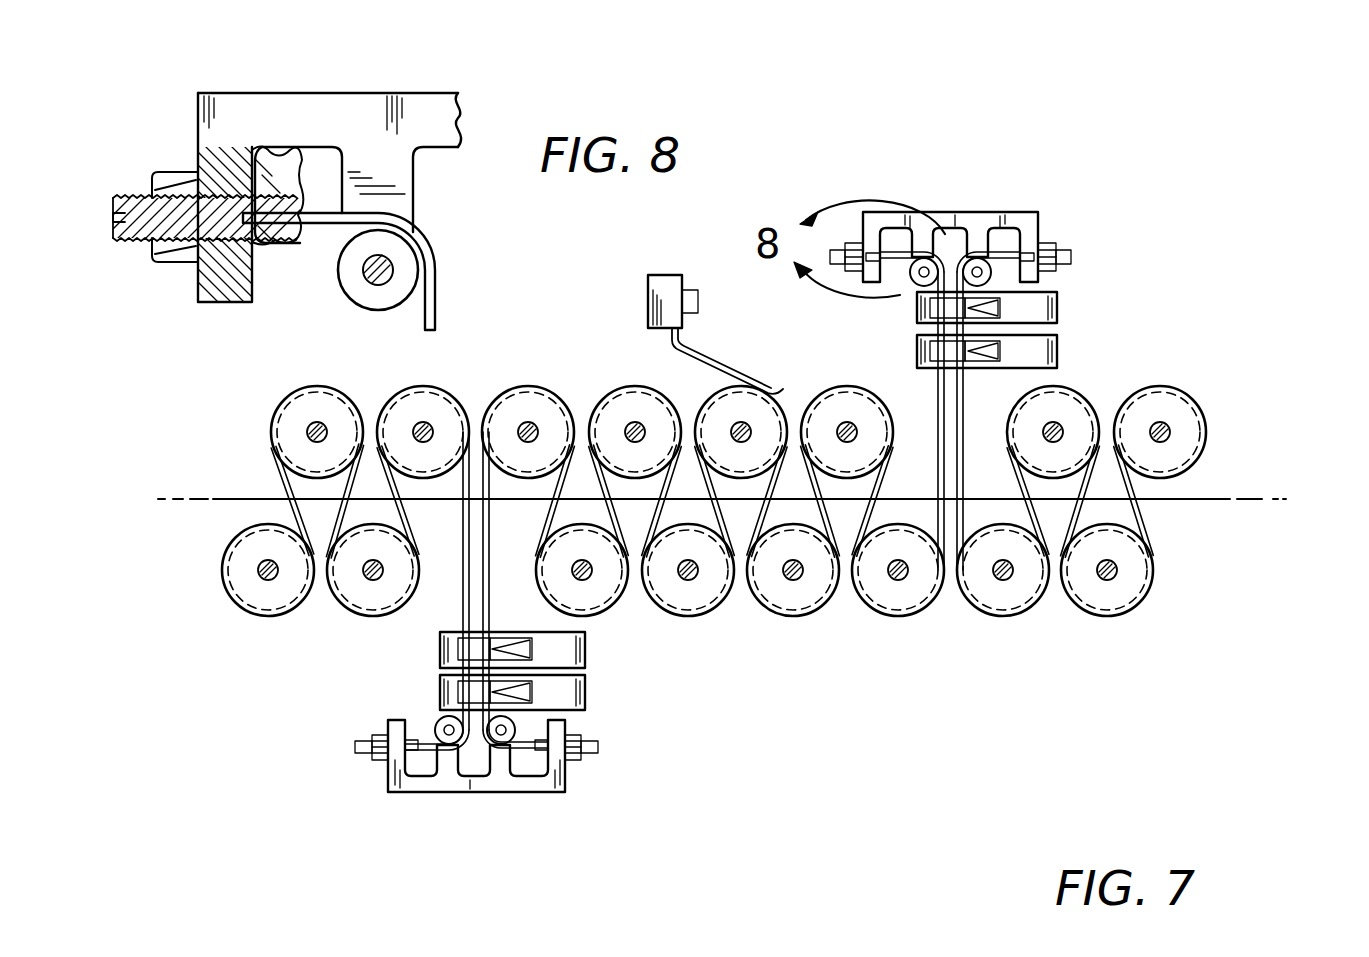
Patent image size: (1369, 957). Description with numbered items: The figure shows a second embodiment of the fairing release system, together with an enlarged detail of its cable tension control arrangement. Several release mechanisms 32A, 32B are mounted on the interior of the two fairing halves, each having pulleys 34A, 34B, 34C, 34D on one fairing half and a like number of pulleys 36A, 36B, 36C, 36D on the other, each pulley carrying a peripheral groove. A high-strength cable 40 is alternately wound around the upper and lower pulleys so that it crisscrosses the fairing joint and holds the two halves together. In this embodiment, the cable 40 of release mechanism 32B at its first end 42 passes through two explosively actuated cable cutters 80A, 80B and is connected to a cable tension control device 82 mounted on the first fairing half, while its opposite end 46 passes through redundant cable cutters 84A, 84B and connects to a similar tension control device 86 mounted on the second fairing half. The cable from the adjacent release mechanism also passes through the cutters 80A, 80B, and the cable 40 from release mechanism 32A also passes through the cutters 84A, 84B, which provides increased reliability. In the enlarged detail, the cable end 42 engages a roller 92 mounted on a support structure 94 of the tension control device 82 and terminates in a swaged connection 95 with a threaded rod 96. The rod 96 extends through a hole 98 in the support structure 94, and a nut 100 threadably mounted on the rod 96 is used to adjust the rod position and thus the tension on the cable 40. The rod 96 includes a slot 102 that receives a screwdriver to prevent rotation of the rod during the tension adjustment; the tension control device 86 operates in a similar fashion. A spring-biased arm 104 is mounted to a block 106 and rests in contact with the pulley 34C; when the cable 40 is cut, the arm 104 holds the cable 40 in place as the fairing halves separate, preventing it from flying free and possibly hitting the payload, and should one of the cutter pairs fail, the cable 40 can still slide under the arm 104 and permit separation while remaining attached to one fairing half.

In FIG. 7, the release mechanism 32A is at (205, 588).
In FIG. 7, the release mechanism 32B is at (710, 715).
In FIG. 7, the pulley 34A is at (528, 386).
In FIG. 7, the pulley 34B is at (628, 388).
In FIG. 7, the pulley 34C is at (775, 398).
In FIG. 7, the pulley 34D is at (851, 388).
In FIG. 7, the pulley 36A is at (604, 612).
In FIG. 7, the pulley 36B is at (702, 612).
In FIG. 7, the pulley 36C is at (806, 612).
In FIG. 7, the pulley 36D is at (906, 612).
In FIG. 8, the cable 40 is at (440, 293).
In FIG. 7, the cable 40 is at (937, 428).
In FIG. 8, the end of cable 42 is at (386, 210).
In FIG. 7, the opposite end of cable 46 is at (503, 760).
In FIG. 7, the explosively actuated cable cutter 80A is at (1057, 355).
In FIG. 7, the explosively actuated cable cutter 80B is at (1057, 308).
In FIG. 8, the cable tension control device 82 is at (348, 92).
In FIG. 7, the cable tension control device 82 is at (950, 215).
In FIG. 7, the cable cutter 84A is at (440, 648).
In FIG. 7, the cable cutter 84B is at (440, 688).
In FIG. 7, the tension control device 86 is at (446, 793).
In FIG. 8, the roller 92 is at (346, 299).
In FIG. 8, the support structure 94 is at (462, 108).
In FIG. 8, the swaged connection 95 is at (286, 203).
In FIG. 8, the threaded rod 96 is at (138, 240).
In FIG. 8, the hole 98 is at (190, 210).
In FIG. 8, the nut 100 is at (170, 264).
In FIG. 8, the slot 102 is at (112, 218).
In FIG. 7, the spring-biased arm 104 is at (716, 352).
In FIG. 7, the block 106 is at (668, 275).